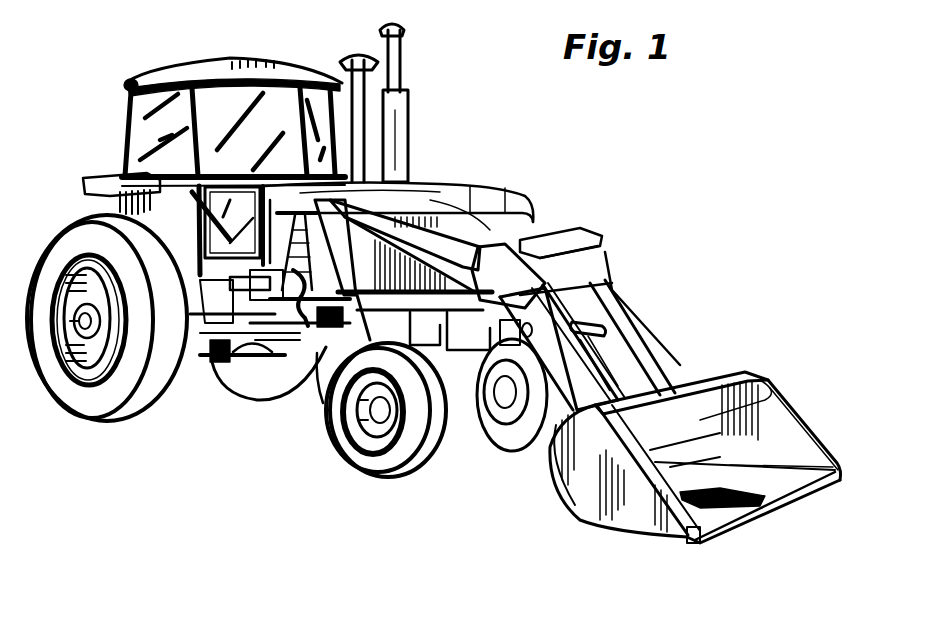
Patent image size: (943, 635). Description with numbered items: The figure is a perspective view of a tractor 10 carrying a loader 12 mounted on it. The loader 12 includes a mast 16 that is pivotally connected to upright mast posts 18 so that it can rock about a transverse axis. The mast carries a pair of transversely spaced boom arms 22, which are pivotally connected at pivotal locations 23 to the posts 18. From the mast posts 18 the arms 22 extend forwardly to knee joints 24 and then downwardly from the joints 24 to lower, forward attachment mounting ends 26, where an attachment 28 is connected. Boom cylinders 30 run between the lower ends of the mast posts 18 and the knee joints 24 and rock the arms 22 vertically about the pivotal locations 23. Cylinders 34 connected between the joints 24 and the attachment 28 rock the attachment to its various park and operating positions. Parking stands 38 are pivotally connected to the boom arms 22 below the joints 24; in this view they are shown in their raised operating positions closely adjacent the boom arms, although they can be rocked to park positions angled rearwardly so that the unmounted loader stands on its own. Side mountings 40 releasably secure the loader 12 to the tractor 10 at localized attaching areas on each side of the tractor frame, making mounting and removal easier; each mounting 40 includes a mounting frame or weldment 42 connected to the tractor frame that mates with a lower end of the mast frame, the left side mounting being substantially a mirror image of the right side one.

The tractor 10 is at (542, 178).
The loader 12 is at (718, 321).
The mast 16 is at (578, 222).
The upright mast posts 18 is at (292, 320).
The boom arms 22 is at (463, 198).
The pivotal locations 23 is at (413, 187).
The knee joints 24 is at (585, 264).
The attachment mounting ends 26 is at (562, 433).
The attachment 28 is at (778, 402).
The boom cylinders 30 is at (440, 405).
The cylinders 34 is at (640, 345).
The parking stands 38 is at (515, 438).
The side mountings 40 is at (253, 378).
The mounting frame or weldment 42 is at (323, 387).